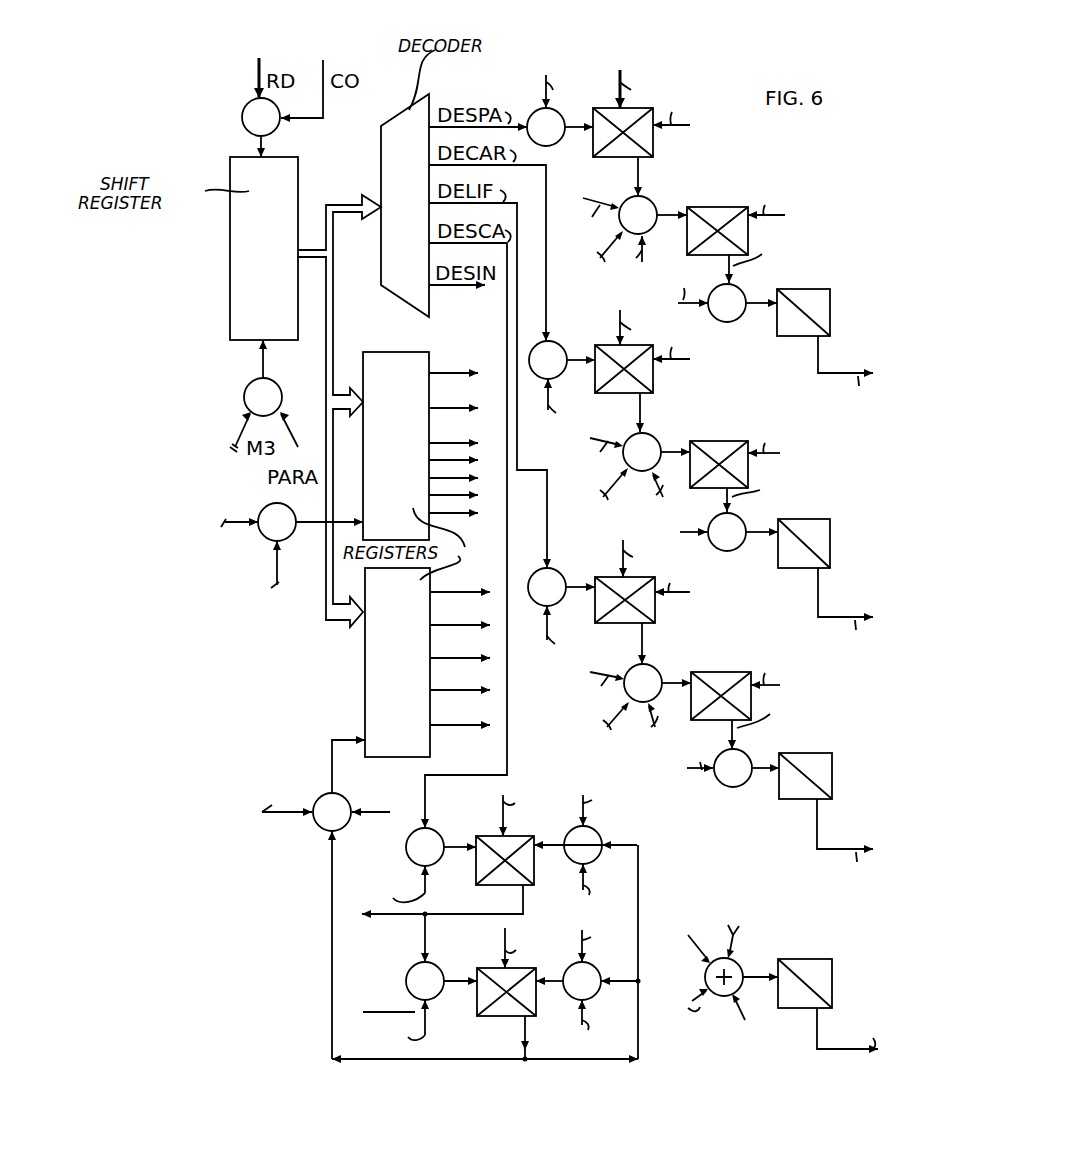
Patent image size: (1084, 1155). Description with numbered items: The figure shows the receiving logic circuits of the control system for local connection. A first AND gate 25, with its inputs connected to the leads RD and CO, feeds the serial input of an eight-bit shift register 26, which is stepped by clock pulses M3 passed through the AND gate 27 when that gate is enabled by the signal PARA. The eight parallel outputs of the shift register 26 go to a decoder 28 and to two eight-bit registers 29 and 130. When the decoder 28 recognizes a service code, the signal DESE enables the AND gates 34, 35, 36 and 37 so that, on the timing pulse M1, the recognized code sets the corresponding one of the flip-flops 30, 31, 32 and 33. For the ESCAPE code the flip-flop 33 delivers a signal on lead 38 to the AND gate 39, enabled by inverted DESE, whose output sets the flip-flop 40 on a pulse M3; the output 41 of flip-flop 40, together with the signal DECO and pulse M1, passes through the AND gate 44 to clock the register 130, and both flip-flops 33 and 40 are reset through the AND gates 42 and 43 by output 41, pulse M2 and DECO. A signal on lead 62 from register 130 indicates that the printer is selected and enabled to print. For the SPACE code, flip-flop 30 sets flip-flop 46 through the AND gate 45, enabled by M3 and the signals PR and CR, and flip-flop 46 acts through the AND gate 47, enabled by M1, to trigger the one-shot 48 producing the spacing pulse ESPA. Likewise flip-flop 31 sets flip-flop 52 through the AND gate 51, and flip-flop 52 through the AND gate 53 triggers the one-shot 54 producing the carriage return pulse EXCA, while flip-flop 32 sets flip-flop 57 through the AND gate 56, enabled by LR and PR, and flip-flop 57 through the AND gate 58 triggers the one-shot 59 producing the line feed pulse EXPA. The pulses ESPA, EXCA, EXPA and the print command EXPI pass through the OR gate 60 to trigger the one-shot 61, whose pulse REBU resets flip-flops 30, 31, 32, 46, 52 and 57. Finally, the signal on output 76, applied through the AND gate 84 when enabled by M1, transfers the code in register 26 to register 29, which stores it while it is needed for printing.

The first AND gate 25 is at (276, 130).
The shift register 26 is at (299, 178).
The AND gate 27 is at (281, 388).
The decoder 28 is at (394, 292).
The register 29 is at (411, 352).
The flip-flop 30 is at (621, 159).
The flip-flop 31 is at (597, 345).
The flip-flop 32 is at (600, 577).
The flip-flop 33 is at (530, 836).
The AND gate 34 is at (559, 140).
The AND gate 35 is at (558, 341).
The AND gate 36 is at (537, 573).
The AND gate 37 is at (450, 832).
The lead 38 is at (473, 922).
The AND gate 39 is at (409, 971).
The flip-flop 40 is at (506, 1018).
The output 41 is at (527, 1028).
The AND gate 42 is at (598, 833).
The AND gate 43 is at (596, 995).
The AND gate 44 is at (314, 828).
The AND gate 45 is at (651, 202).
The flip-flop 46 is at (727, 207).
The AND gate 47 is at (740, 292).
The one-shot 48 is at (790, 290).
The AND gate 51 is at (667, 428).
The flip-flop 52 is at (734, 441).
The AND gate 53 is at (745, 520).
The one-shot 54 is at (824, 519).
The AND gate 56 is at (669, 660).
The flip-flop 57 is at (739, 672).
The AND gate 58 is at (748, 755).
The one-shot 59 is at (832, 753).
The OR gate 60 is at (750, 962).
The one-shot 61 is at (829, 991).
The lead 62 is at (460, 650).
The output 76 is at (278, 578).
The AND gate 84 is at (288, 540).
The register 130 is at (365, 678).